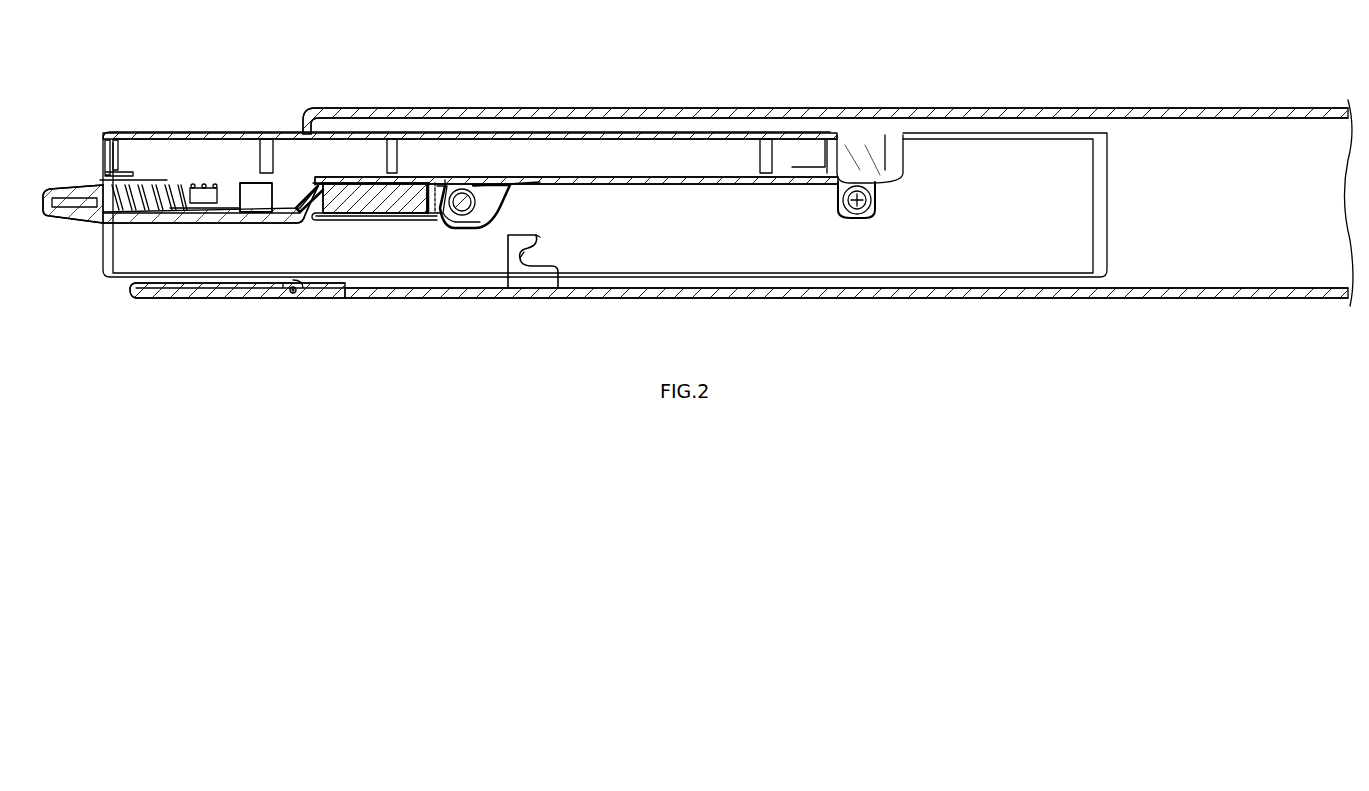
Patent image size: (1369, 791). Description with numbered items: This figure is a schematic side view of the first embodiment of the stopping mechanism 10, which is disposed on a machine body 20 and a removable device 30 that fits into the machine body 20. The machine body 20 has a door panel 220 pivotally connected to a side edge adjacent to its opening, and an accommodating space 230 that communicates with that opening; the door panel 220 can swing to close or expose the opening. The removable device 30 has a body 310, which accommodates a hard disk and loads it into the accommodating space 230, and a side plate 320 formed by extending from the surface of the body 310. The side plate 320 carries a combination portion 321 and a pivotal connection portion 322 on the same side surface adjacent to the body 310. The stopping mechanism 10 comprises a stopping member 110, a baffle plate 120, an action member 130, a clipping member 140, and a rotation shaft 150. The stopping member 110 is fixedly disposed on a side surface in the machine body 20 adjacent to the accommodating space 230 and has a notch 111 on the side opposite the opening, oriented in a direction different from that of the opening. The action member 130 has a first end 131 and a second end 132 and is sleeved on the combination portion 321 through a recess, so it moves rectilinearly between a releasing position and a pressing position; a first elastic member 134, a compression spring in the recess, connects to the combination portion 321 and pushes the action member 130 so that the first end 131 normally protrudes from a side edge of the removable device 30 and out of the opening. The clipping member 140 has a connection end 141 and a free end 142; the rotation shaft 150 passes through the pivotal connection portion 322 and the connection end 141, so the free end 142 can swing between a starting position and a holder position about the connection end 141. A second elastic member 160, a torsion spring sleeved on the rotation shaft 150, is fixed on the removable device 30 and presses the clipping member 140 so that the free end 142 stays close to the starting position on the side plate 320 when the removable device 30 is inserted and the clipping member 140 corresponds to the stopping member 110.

The stopping mechanism 10 is at (388, 238).
The machine body 20 is at (862, 100).
The removable device 30 is at (1120, 228).
The stopping member 110 is at (543, 237).
The notch 111 is at (548, 252).
The baffle plate 120 is at (197, 213).
The action member 130 is at (255, 213).
The first end 131 is at (63, 218).
The second end 132 is at (314, 182).
The first elastic member 134 is at (190, 185).
The clipping member 140 is at (428, 206).
The connection end 141 is at (462, 216).
The free end 142 is at (330, 221).
The rotation shaft 150 is at (492, 208).
The second elastic member 160 is at (528, 176).
The door panel 220 is at (200, 290).
The accommodating space 230 is at (1289, 130).
The body 310 is at (706, 290).
The side plate 320 is at (632, 133).
The combination portion 321 is at (290, 165).
The pivotal connection portion 322 is at (470, 222).